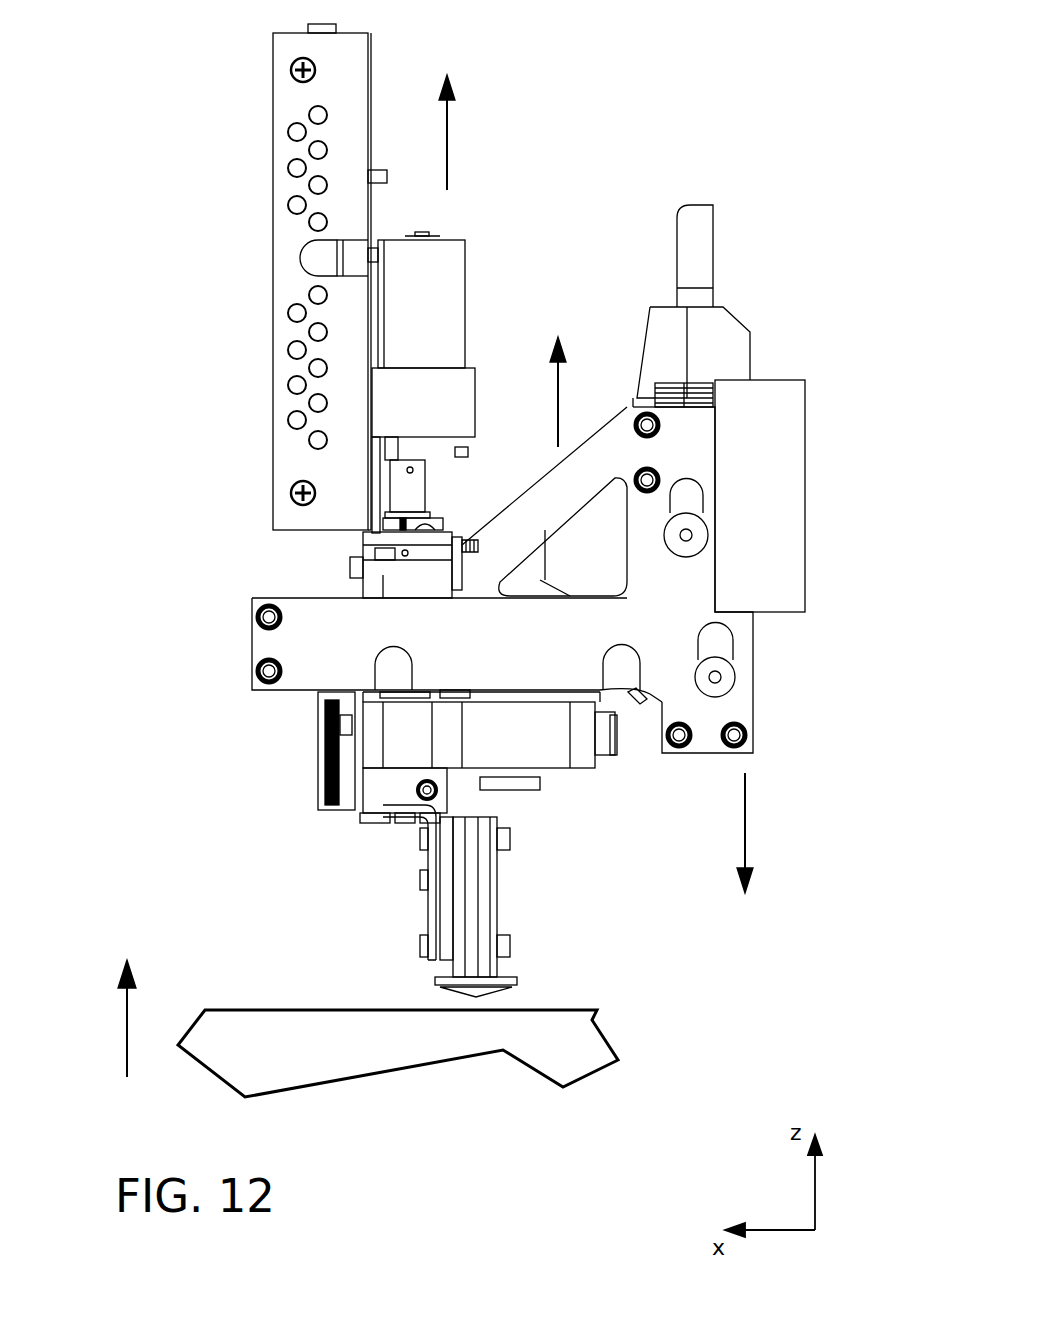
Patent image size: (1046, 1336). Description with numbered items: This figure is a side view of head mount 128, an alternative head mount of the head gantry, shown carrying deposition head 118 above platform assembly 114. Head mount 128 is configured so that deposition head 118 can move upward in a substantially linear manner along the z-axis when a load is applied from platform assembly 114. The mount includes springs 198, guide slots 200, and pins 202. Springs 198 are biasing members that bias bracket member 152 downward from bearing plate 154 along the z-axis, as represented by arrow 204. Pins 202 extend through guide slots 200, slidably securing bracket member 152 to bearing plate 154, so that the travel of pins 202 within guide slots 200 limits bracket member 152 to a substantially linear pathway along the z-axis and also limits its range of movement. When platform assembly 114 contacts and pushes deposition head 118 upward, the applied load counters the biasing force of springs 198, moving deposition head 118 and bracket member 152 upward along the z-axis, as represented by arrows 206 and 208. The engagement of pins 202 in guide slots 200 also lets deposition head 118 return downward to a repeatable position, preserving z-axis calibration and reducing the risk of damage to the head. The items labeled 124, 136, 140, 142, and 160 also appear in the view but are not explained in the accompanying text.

The platform assembly 114 is at (598, 1052).
The deposition head 118 is at (285, 262).
The block 124 is at (790, 398).
The head mount 128 is at (198, 538).
The dispensing tip 136 is at (410, 994).
The surface 140 is at (245, 1010).
The upward direction 142 is at (127, 1010).
The bracket member 152 is at (226, 666).
The bearing plate 154 is at (730, 325).
The arm 160 is at (660, 702).
The springs 198 is at (630, 385).
The guide slots 200 is at (718, 497).
The pins 202 is at (692, 535).
The arrow 204 is at (745, 815).
The arrow 206 is at (445, 138).
The arrow 208 is at (555, 402).